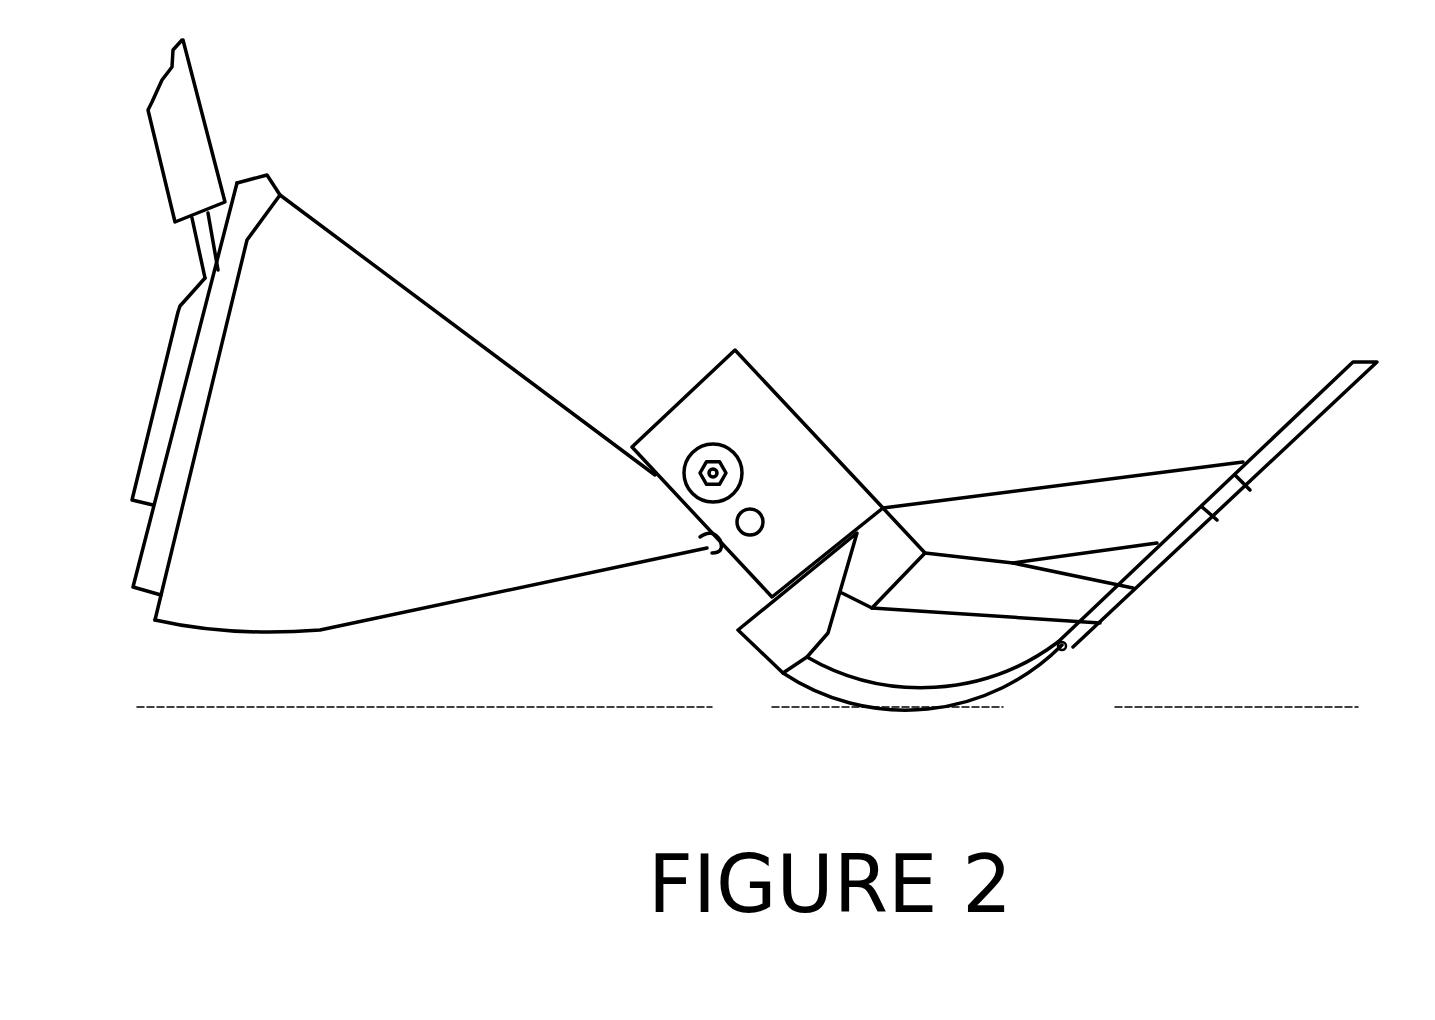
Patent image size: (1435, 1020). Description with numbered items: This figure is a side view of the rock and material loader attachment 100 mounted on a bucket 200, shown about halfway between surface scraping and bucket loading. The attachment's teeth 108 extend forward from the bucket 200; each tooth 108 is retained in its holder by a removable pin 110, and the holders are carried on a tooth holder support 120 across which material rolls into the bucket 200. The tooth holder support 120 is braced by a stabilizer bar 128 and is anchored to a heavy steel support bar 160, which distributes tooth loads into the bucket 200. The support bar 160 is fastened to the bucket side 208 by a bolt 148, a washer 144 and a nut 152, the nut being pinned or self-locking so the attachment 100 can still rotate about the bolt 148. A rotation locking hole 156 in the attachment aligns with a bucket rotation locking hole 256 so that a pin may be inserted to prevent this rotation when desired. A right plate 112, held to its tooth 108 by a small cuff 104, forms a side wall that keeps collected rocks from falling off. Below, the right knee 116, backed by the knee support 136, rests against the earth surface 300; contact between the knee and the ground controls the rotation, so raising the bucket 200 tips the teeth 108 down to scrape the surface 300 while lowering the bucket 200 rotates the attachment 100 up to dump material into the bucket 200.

The rock and material loader attachment 100 is at (1018, 367).
The cuff 104 is at (1310, 514).
The tooth 108 is at (1217, 488).
The removable pin 110 is at (1038, 676).
The right plate 112 is at (1063, 399).
The right knee 116 is at (1120, 637).
The tooth holder support 120 is at (1073, 590).
The stabilizer bar 128 is at (948, 430).
The knee support 136 is at (773, 628).
The washer 144 is at (687, 380).
The bolt 148 is at (632, 404).
The nut 152 is at (657, 390).
The rotation locking hole 156 is at (735, 378).
The support bar 160 is at (804, 423).
The bucket 200 is at (382, 272).
The bucket side 208 is at (420, 403).
The bucket rotation locking hole 256 is at (634, 590).
The earth surface 300 is at (455, 705).